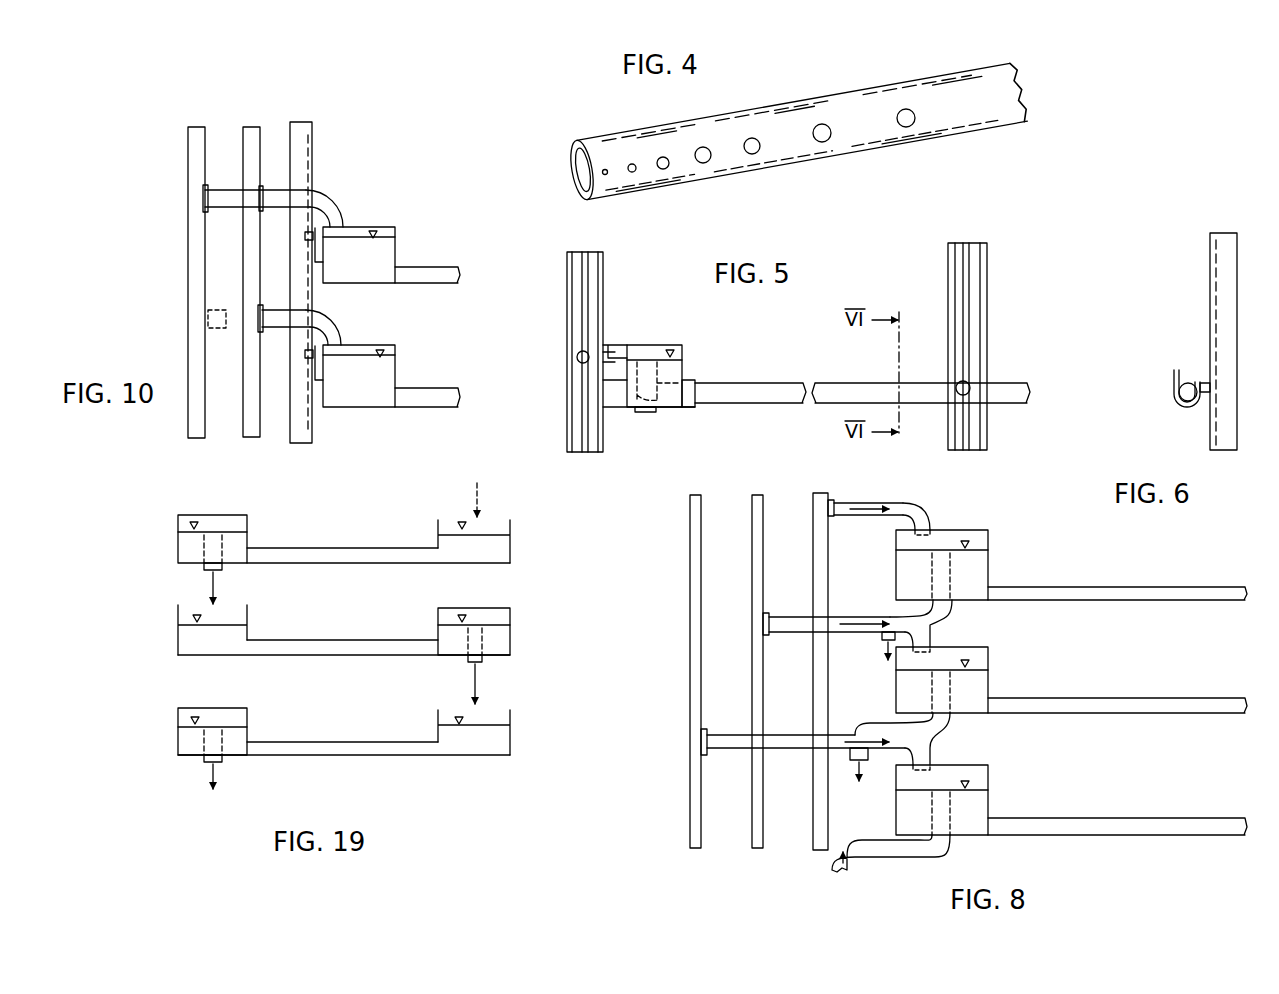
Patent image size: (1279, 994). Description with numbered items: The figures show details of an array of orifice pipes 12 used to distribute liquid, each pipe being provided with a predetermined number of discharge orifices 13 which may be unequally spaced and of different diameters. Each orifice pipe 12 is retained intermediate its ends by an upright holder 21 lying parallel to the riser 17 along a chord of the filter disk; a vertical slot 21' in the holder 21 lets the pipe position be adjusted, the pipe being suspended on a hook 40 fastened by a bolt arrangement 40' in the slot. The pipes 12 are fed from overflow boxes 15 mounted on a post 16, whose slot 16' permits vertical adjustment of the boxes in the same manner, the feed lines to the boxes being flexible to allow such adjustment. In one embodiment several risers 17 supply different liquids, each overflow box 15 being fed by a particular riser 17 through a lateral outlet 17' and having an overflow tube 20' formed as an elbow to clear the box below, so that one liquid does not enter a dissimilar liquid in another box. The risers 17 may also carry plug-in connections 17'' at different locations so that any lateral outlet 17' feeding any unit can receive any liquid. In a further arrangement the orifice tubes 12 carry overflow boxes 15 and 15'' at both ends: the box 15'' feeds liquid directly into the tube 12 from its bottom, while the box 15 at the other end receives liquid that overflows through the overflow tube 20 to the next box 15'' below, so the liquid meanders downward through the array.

In FIG. 4, the orifice pipe 12 is at (962, 110).
In FIG. 10, the orifice pipe 12 is at (416, 270).
In FIG. 5, the orifice pipe 12 is at (820, 392).
In FIG. 6, the orifice pipe 12 is at (1185, 402).
In FIG. 19, the orifice pipe 12 is at (348, 642).
In FIG. 8, the orifice pipe 12 is at (1104, 696).
In FIG. 4, the discharge orifices 13 is at (705, 163).
In FIG. 10, the overflow box 15 is at (350, 296).
In FIG. 5, the overflow box 15 is at (649, 394).
In FIG. 19, the overflow box 15 is at (347, 635).
In FIG. 8, the overflow box 15 is at (959, 679).
In FIG. 19, the overflow box 15'' is at (345, 619).
In FIG. 10, the post 16 is at (320, 282).
In FIG. 5, the post 16 is at (606, 352).
In FIG. 5, the slot 16' is at (553, 423).
In FIG. 10, the riser 17 is at (224, 282).
In FIG. 8, the riser 17 is at (759, 671).
In FIG. 10, the lateral outlet 17' is at (287, 265).
In FIG. 8, the lateral outlet 17' is at (815, 635).
In FIG. 10, the plug-in connection 17'' is at (251, 241).
In FIG. 19, the overflow tube 20 is at (343, 676).
In FIG. 8, the overflow tube 20' is at (892, 736).
In FIG. 5, the holder 21 is at (995, 346).
In FIG. 6, the holder 21 is at (1200, 341).
In FIG. 5, the vertical slot 21' is at (929, 267).
In FIG. 6, the hook 40 is at (1168, 385).
In FIG. 5, the bolt arrangement 40' is at (780, 364).